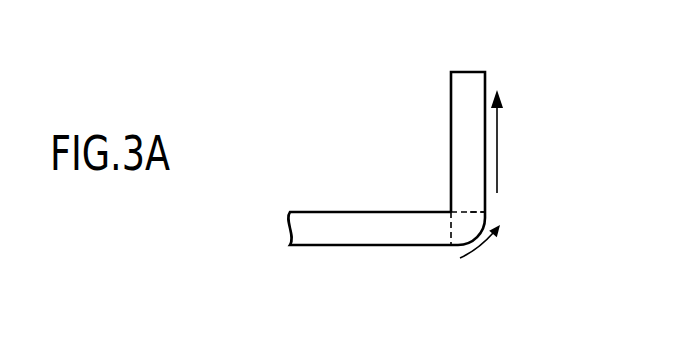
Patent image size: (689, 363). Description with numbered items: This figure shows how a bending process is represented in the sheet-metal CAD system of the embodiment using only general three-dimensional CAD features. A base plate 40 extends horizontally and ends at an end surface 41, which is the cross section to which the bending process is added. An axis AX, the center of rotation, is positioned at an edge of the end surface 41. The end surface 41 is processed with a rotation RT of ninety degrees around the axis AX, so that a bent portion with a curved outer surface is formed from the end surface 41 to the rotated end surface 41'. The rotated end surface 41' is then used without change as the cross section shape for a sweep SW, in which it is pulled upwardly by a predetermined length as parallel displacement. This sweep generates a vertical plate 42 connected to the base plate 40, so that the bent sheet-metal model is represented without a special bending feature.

The base plate 40 is at (382, 238).
The end surface 41 is at (456, 271).
The rotated end surface 41' is at (525, 187).
The vertical plate 42 is at (477, 88).
The axis AX is at (450, 212).
The sweep SW is at (516, 141).
The rotation RT is at (491, 253).